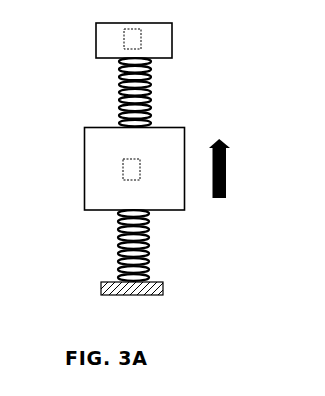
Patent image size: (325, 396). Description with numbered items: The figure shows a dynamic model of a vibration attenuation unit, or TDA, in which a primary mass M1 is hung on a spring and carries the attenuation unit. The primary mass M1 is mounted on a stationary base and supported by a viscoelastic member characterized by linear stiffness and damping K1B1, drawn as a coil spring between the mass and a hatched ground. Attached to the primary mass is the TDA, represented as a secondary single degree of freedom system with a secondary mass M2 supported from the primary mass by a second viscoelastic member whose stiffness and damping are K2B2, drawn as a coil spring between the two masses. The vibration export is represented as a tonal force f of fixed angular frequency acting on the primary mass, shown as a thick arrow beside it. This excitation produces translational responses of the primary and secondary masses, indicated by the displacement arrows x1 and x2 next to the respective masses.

The secondary mass M2 is at (157, 45).
The secondary viscoelastic member stiffness and damping K2B2 is at (160, 92).
The primary mass M1 is at (170, 152).
The primary viscoelastic member stiffness and damping K1B1 is at (153, 253).
The translational response of the secondary mass x2 is at (80, 23).
The translational response of the primary mass x1 is at (73, 143).
The tonal force f is at (232, 168).